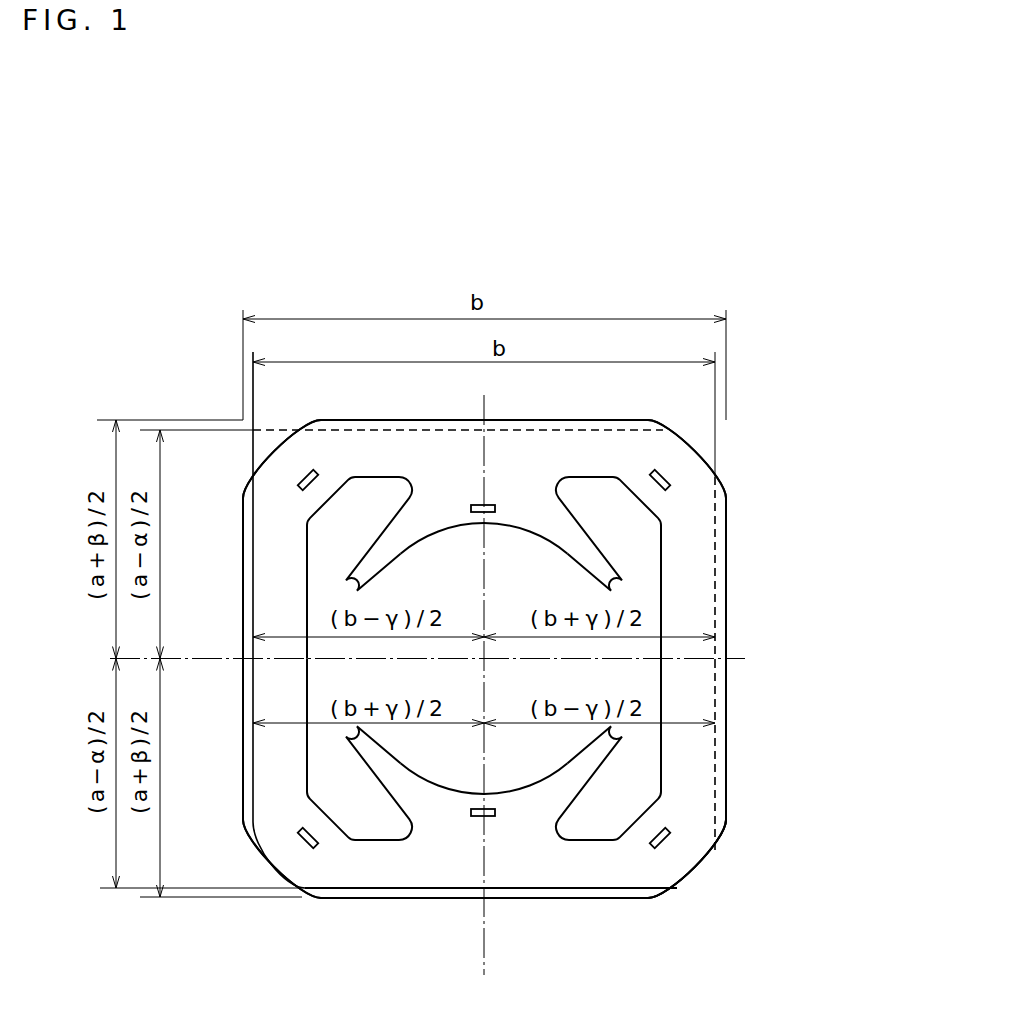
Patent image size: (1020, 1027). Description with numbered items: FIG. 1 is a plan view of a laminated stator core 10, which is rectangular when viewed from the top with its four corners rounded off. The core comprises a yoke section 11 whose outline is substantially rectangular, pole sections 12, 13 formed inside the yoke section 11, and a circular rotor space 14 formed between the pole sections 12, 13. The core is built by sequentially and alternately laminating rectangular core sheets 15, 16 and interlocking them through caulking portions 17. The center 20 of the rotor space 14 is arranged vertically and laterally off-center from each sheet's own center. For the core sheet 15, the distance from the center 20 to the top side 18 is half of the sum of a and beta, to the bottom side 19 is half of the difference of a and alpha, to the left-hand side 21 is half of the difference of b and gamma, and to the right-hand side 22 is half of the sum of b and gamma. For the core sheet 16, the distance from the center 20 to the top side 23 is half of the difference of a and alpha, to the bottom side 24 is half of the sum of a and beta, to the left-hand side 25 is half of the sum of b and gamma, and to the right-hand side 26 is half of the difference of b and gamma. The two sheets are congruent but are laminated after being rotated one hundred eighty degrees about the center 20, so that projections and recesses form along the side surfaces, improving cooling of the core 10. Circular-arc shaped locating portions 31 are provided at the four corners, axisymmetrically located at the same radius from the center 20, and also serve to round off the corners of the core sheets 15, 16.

The laminated stator core 10 is at (700, 288).
The yoke section 11 is at (457, 449).
The pole section 12 is at (528, 510).
The pole section 13 is at (523, 812).
The rotor space 14 is at (446, 779).
The core sheet 15 is at (700, 771).
The core sheet 16 is at (716, 803).
The caulking portion 17 is at (303, 473).
The top side 18 is at (415, 420).
The bottom side 19 is at (385, 893).
The center 20 is at (487, 661).
The left-hand side 21 is at (254, 733).
The right-hand side 22 is at (729, 700).
The top side 23 is at (546, 431).
The bottom side 24 is at (592, 900).
The left-hand side 25 is at (243, 598).
The right-hand side 26 is at (714, 608).
The locating portion 31 is at (266, 456).